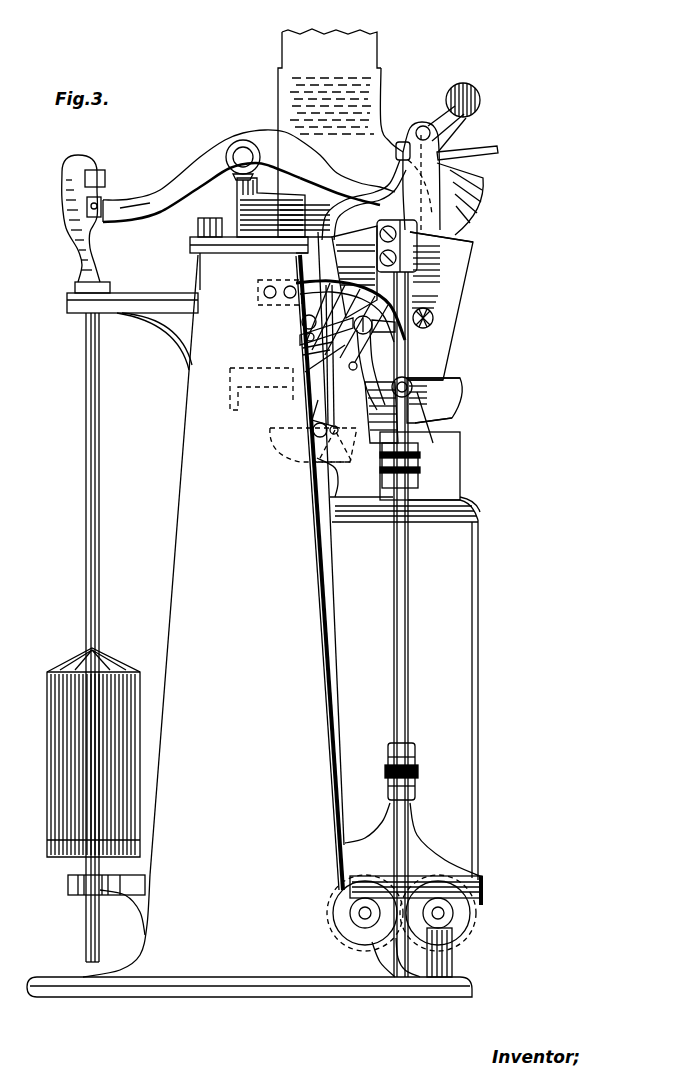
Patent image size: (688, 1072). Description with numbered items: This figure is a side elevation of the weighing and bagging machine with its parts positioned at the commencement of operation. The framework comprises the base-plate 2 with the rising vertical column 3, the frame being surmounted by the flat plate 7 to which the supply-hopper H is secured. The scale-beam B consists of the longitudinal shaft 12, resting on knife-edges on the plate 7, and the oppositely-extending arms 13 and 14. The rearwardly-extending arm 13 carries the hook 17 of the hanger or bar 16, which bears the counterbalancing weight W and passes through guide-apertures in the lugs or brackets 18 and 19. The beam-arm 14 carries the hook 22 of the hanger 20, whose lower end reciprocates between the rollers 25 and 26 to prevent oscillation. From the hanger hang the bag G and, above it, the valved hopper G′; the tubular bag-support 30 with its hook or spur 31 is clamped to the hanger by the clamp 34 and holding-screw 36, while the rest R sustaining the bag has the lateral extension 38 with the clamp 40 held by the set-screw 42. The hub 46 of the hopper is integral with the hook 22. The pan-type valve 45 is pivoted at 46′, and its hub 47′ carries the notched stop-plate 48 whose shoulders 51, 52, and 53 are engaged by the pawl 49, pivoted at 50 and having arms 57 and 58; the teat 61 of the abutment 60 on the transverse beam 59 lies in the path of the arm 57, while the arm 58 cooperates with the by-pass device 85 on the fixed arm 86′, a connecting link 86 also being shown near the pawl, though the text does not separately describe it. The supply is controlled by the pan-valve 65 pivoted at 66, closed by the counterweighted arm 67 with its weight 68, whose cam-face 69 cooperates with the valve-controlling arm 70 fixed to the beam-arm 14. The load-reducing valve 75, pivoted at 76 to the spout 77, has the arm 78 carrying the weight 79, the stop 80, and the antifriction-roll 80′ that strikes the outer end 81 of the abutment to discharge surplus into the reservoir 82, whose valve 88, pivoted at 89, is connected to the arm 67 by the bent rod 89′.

The base-plate 2 is at (181, 985).
The vertical column 3 is at (182, 602).
The flat plate 7 is at (190, 247).
The longitudinal shaft 12 is at (242, 160).
The rearwardly-extending arm 13 is at (150, 205).
The beam-arm 14 is at (288, 148).
The hanger or bar 16 is at (92, 587).
The hook 17 is at (67, 242).
The lug or bracket 18 is at (150, 313).
The lug or bracket 19 is at (68, 886).
The hanger 20 is at (409, 676).
The hook 22 is at (447, 187).
The roller 25 is at (360, 888).
The roller 26 is at (453, 893).
The bag-support 30 is at (458, 468).
The hook or spur 31 is at (468, 502).
The clamp 34 is at (390, 484).
The holding-screw 36 is at (418, 470).
The lateral extension 38 is at (425, 834).
The clamp 40 is at (410, 754).
The set-screw 42 is at (419, 770).
The valve 45 is at (461, 399).
The hub 46 is at (432, 233).
The pivot 46′ is at (426, 377).
The hub of the valve 47′ is at (440, 380).
The notched stop-plate 48 is at (418, 421).
The pawl 49 is at (408, 379).
The pivot 50 is at (403, 275).
The shoulder 51 is at (364, 388).
The shoulder 52 is at (373, 444).
The shoulder 53 is at (424, 437).
The pawl-arm 57 is at (356, 334).
The pawl-arm 58 is at (403, 307).
The transverse beam 59 is at (230, 392).
The abutment or arm 60 is at (303, 365).
The teat 61 is at (300, 362).
The pan-valve 65 is at (484, 195).
The pivot or trunnion 66 is at (401, 141).
The counterweighted arm 67 is at (440, 128).
The weight 68 is at (468, 90).
The cam-face 69 is at (456, 142).
The valve-controlling arm 70 is at (498, 149).
The load-reducing valve 75 is at (323, 368).
The pivot 76 is at (333, 327).
The load-reducing spout 77 is at (353, 330).
The arm 78 is at (354, 272).
The weight 79 is at (298, 312).
The pin or stop 80 is at (358, 366).
The antifriction-roll 80′ is at (303, 325).
The outer end of the abutment-arm 81 is at (330, 357).
The reservoir 82 is at (327, 412).
The by-pass device 85 is at (433, 315).
The link 86 is at (400, 332).
The fixed arm 86′ is at (300, 282).
The valve 88 is at (325, 432).
The pivot 89 is at (335, 431).
The bent rod 89′ is at (342, 200).
The scale-beam B is at (140, 182).
The bag G is at (468, 613).
The valved hopper G′ is at (447, 306).
The supply-hopper H is at (287, 97).
The rest R is at (483, 895).
The weight W is at (55, 772).